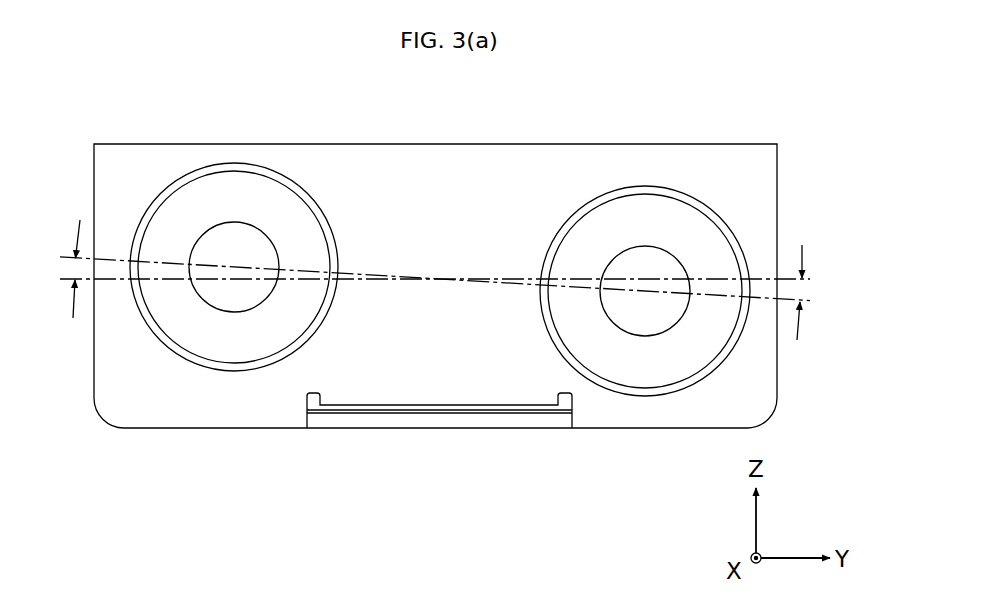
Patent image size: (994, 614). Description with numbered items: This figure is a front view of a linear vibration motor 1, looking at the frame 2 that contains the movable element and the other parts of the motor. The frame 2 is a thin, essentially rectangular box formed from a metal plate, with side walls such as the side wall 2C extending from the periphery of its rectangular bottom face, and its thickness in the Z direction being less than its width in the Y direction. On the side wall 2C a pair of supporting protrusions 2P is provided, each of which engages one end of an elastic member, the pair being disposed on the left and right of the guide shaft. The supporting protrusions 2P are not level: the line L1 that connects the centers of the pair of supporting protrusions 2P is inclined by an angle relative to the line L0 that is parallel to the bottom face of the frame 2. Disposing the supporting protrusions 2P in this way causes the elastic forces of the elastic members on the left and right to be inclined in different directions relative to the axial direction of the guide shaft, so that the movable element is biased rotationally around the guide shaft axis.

The linear vibration motor 1 is at (453, 281).
The frame 2 is at (427, 440).
The side wall 2C is at (767, 190).
The supporting protrusion 2P is at (233, 373).
The line parallel to the bottom face L0 is at (806, 272).
The line connecting the centers of the supporting protrusions L1 is at (808, 312).